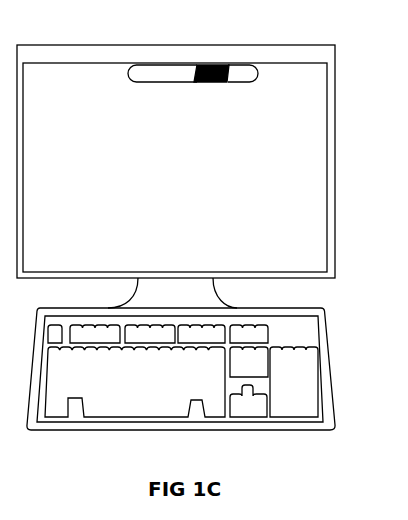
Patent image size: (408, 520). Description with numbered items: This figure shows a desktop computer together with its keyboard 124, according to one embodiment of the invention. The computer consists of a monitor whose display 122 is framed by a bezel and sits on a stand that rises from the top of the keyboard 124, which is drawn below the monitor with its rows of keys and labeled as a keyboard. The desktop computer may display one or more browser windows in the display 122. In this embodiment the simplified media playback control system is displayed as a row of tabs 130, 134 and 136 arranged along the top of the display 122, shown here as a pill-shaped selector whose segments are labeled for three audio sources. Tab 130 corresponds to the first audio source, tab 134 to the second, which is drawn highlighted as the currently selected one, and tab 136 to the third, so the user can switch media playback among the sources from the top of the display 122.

The display 122 is at (328, 80).
The keyboard 124 is at (318, 323).
The tab 130 is at (173, 70).
The tab 134 is at (215, 67).
The tab 136 is at (253, 72).